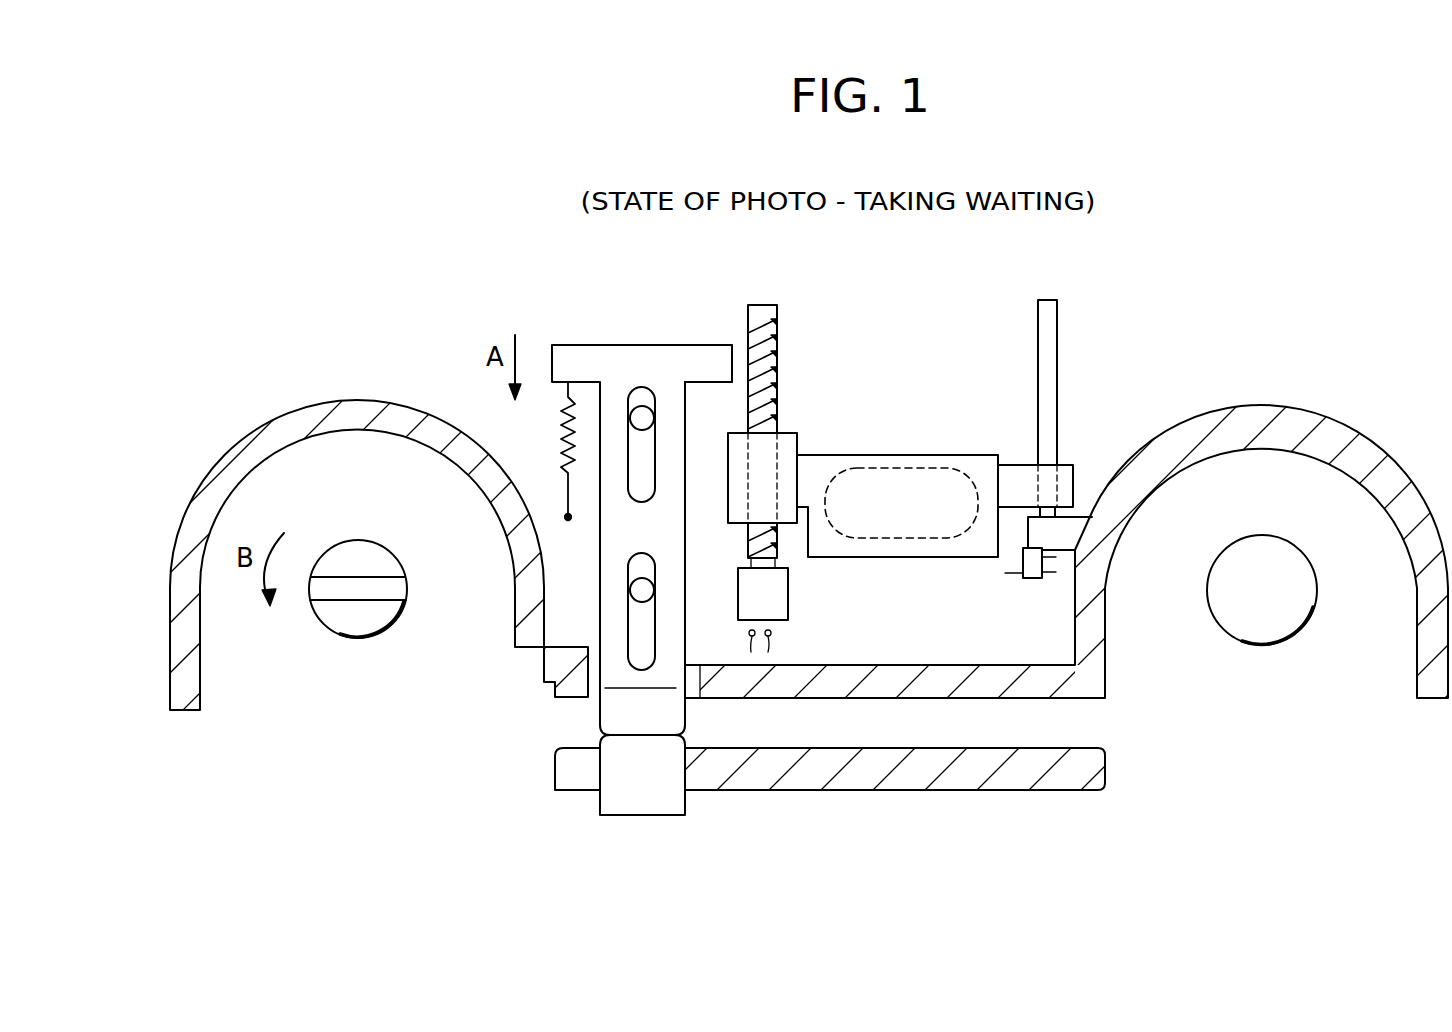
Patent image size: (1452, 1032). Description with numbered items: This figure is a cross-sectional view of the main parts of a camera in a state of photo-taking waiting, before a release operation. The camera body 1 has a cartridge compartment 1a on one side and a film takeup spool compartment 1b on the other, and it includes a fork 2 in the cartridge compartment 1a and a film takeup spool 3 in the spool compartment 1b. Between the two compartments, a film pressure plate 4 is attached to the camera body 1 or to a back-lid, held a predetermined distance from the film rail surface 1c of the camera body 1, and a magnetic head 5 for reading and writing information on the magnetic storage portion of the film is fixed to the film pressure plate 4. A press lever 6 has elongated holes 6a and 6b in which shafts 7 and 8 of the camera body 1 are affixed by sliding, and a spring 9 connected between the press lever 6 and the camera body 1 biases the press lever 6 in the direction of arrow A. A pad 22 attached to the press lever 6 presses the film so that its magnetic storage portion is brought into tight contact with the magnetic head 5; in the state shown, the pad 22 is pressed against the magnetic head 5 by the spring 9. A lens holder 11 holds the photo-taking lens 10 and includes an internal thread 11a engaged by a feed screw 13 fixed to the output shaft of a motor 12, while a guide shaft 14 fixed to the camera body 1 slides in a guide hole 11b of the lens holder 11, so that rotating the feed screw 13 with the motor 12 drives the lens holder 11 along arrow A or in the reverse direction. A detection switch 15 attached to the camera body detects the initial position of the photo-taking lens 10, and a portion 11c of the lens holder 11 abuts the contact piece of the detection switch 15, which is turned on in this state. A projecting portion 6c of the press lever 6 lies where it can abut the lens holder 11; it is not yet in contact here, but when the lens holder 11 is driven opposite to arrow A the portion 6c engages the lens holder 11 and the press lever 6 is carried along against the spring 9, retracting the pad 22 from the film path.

The camera body 1 is at (726, 550).
The cartridge compartment 1a is at (268, 478).
The film takeup spool compartment 1b is at (1380, 450).
The film rail surface 1c is at (858, 690).
The fork 2 is at (370, 624).
The film takeup spool 3 is at (1291, 644).
The film pressure plate 4 is at (876, 775).
The magnetic head 5 is at (640, 800).
The press lever 6 is at (588, 345).
The elongated hole 6a is at (655, 395).
The elongated hole 6b is at (628, 565).
The projecting portion 6c is at (710, 368).
The shaft 7 is at (647, 417).
The shaft 8 is at (653, 588).
The spring 9 is at (568, 432).
The photo-taking lens 10 is at (916, 468).
The lens holder 11 is at (910, 500).
The internal thread 11a is at (790, 442).
The guide hole 11b is at (1032, 465).
The portion of the lens holder 11c is at (985, 553).
The motor 12 is at (788, 589).
The feed screw 13 is at (777, 324).
The guide shaft 14 is at (1057, 319).
The detection switch 15 is at (1033, 579).
The pad 22 is at (605, 717).